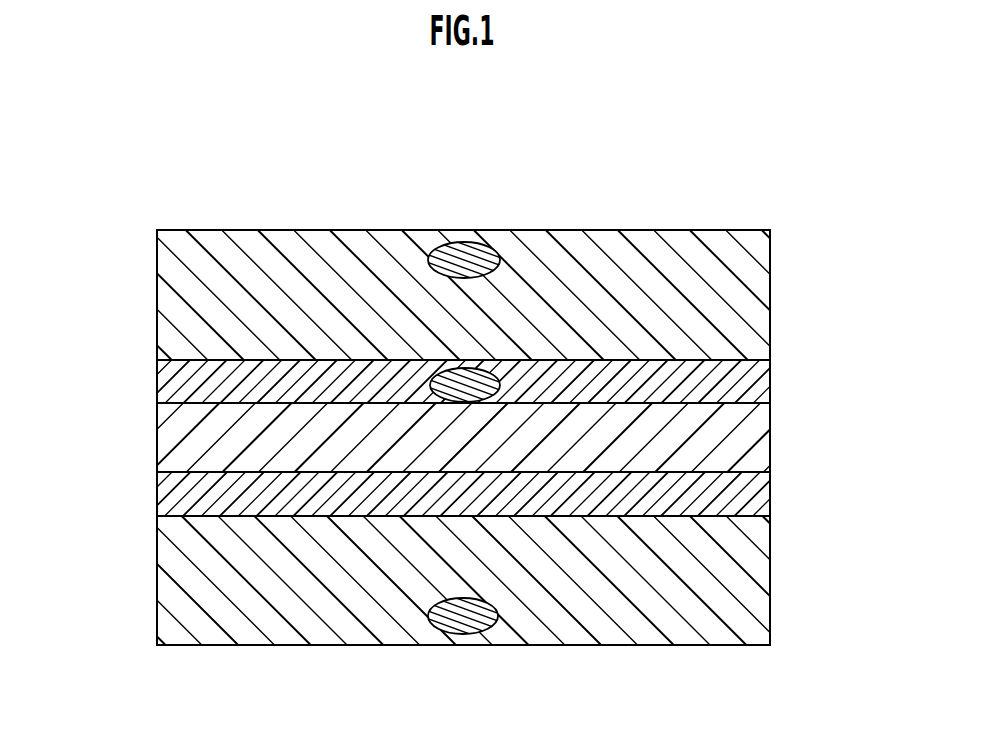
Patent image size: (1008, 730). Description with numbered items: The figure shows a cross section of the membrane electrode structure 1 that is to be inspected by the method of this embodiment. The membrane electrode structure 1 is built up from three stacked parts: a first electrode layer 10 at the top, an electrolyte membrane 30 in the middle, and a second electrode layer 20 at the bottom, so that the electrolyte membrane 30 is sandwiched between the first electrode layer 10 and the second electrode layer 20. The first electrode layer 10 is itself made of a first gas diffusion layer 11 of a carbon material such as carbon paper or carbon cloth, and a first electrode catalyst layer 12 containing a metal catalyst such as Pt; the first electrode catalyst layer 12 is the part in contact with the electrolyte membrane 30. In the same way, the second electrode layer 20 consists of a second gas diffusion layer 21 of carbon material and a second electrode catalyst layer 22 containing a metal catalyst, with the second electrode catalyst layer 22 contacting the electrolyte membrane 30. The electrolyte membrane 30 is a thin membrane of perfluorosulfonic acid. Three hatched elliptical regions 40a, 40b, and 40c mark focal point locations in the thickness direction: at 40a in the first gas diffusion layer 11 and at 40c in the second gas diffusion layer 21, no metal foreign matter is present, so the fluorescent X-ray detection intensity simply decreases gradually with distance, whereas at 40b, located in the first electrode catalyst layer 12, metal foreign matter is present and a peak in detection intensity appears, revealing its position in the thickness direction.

The membrane electrode structure 1 is at (183, 200).
The first electrode layer 10 is at (67, 258).
The first gas diffusion layer 11 is at (157, 313).
The first electrode catalyst layer 12 is at (157, 387).
The electrolyte membrane 30 is at (157, 447).
The second electrode layer 20 is at (860, 437).
The second electrode catalyst layer 22 is at (772, 493).
The second gas diffusion layer 21 is at (772, 580).
The focal point region without metal foreign matter 40a is at (476, 256).
The focal point region with metal foreign matter 40b is at (487, 372).
The focal point region without metal foreign matter 40c is at (463, 612).